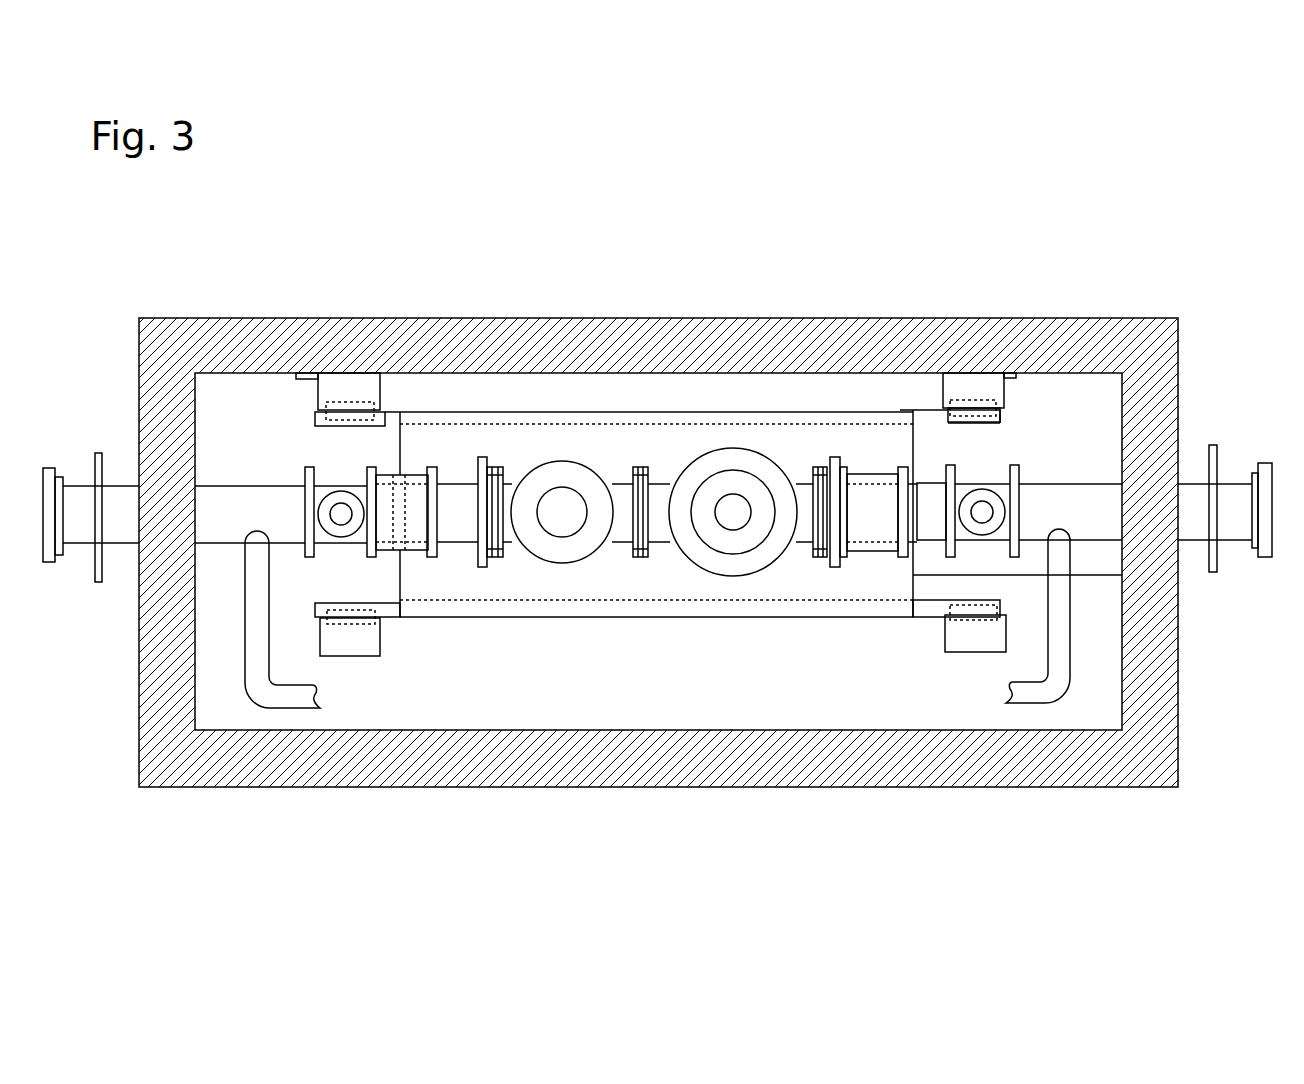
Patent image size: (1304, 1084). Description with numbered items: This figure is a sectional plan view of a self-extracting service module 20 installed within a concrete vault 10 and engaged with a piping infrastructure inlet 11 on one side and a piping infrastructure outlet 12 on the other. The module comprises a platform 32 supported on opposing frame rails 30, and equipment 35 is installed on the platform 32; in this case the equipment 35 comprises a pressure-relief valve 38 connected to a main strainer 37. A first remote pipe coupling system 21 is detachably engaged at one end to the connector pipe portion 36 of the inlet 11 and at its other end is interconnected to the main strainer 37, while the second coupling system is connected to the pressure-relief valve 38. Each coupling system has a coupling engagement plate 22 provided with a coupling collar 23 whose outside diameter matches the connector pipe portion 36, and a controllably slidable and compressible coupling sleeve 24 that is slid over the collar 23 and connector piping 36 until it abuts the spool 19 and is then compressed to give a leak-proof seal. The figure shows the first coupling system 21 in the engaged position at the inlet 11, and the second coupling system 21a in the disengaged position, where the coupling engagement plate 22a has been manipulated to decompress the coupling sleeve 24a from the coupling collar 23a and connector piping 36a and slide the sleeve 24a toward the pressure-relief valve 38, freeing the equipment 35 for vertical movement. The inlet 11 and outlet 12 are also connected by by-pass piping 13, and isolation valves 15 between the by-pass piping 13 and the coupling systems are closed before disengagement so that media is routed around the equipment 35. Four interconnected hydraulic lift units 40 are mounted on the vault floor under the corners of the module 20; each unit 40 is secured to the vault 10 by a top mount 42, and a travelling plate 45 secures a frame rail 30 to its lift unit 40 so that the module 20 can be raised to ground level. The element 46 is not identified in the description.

The concrete vault 10 is at (182, 318).
The piping infrastructure inlet 11 is at (275, 485).
The piping infrastructure outlet 12 is at (1085, 483).
The by-pass piping 13 is at (245, 648).
The isolation valve 15 is at (338, 492).
The spool 19 is at (363, 563).
The self-extracting service module 20 is at (655, 382).
The remote pipe coupling system 21 is at (524, 369).
The remote pipe coupling system in disengaged position 21a is at (826, 369).
The coupling engagement plate 22 is at (482, 456).
The coupling engagement plate 22a is at (835, 456).
The coupling collar 23 is at (465, 483).
The coupling collar 23a is at (862, 483).
The coupling sleeve 24 is at (420, 472).
The coupling sleeve 24a is at (880, 472).
The frame rail 30 is at (1000, 603).
The platform 32 is at (1122, 575).
The equipment 35 is at (641, 595).
The connector pipe portion 36 is at (387, 485).
The connector pipe portion 36a is at (928, 480).
The main strainer 37 is at (562, 563).
The pressure-relief valve 38 is at (735, 577).
The hydraulic lift unit 40 is at (781, 544).
The top mount 42 is at (1006, 392).
The travelling plate 45 is at (363, 623).
The tab 46 is at (303, 375).